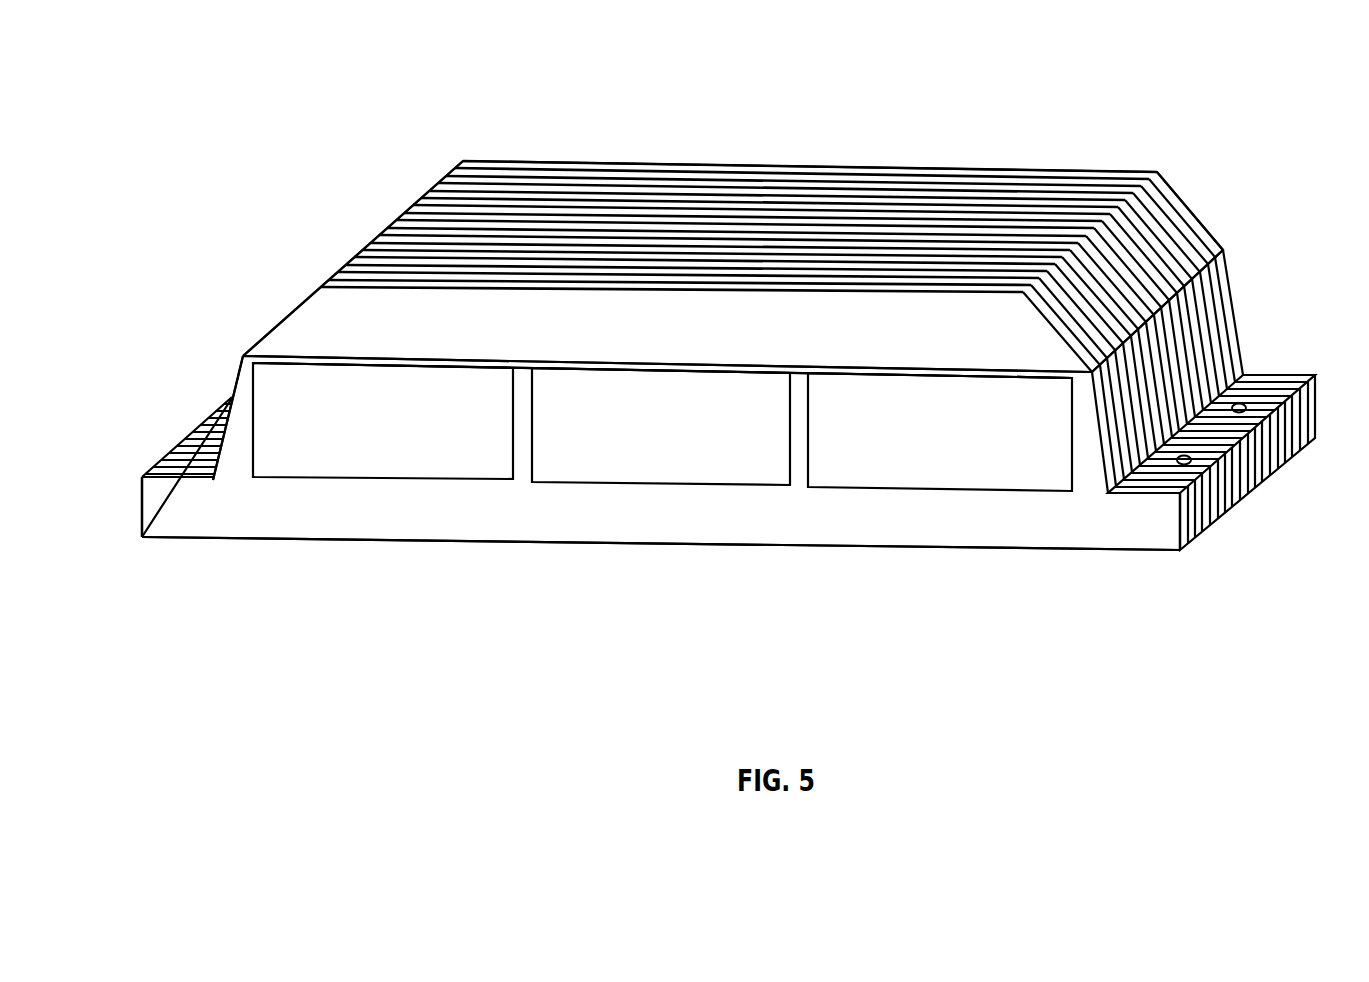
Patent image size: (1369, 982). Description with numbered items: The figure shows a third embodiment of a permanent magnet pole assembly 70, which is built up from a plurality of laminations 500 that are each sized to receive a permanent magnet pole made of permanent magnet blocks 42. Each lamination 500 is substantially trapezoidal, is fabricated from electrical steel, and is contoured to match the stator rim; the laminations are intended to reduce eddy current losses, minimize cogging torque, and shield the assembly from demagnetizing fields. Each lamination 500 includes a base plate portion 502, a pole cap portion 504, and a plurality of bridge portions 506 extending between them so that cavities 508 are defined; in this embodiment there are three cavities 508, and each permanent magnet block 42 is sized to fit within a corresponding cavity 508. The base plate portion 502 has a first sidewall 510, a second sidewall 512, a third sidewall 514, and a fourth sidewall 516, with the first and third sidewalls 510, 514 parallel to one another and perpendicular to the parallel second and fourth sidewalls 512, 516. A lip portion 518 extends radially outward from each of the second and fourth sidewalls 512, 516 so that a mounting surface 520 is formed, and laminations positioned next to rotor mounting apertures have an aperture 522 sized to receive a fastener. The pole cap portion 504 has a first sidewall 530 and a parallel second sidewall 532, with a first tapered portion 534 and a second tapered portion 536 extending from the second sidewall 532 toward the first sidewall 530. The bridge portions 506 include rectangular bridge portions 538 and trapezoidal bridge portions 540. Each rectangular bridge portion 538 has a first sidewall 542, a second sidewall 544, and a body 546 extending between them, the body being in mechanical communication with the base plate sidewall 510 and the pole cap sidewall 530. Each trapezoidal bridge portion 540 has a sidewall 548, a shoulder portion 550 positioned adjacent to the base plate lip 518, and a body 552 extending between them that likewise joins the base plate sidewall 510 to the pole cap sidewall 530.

The permanent magnet pole assembly 70 is at (340, 130).
The lamination 500 is at (748, 152).
The permanent magnet block 42 is at (408, 462).
The base plate portion 502 is at (843, 548).
The pole cap portion 504 is at (316, 310).
The bridge portion 506 is at (797, 398).
The cavity 508 is at (377, 483).
The first sidewall 510 is at (960, 492).
The second sidewall 512 is at (1213, 525).
The third sidewall 514 is at (1000, 550).
The fourth sidewall 516 is at (142, 497).
The lip portion 518 is at (150, 456).
The mounting surface 520 is at (1298, 378).
The aperture 522 is at (1247, 410).
The first sidewall 530 is at (273, 360).
The second sidewall 532 is at (533, 160).
The first tapered portion 534 is at (1195, 220).
The second tapered portion 536 is at (409, 208).
The rectangular bridge portion 538 is at (555, 310).
The trapezoidal bridge portion 540 is at (1062, 493).
The first sidewall 542 is at (513, 461).
The second sidewall 544 is at (532, 463).
The body 546 is at (528, 545).
The sidewall 548 is at (253, 459).
The shoulder portion 550 is at (1234, 300).
The body 552 is at (233, 390).